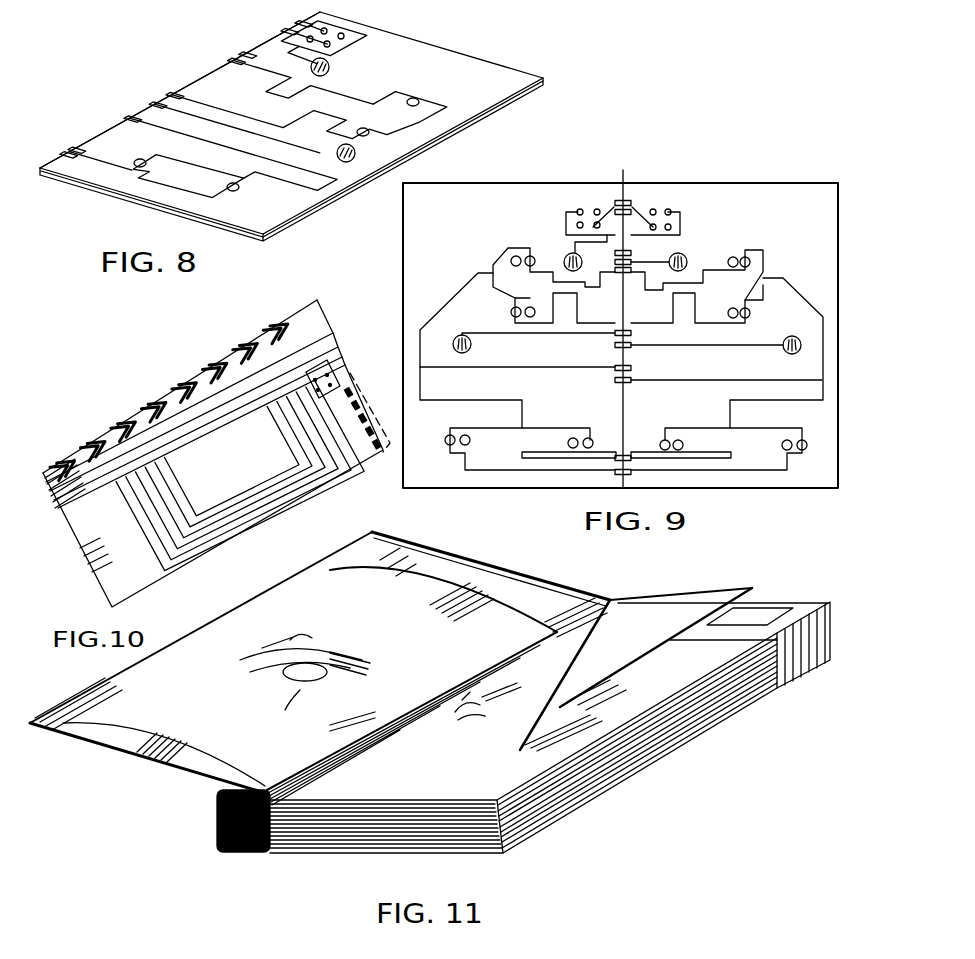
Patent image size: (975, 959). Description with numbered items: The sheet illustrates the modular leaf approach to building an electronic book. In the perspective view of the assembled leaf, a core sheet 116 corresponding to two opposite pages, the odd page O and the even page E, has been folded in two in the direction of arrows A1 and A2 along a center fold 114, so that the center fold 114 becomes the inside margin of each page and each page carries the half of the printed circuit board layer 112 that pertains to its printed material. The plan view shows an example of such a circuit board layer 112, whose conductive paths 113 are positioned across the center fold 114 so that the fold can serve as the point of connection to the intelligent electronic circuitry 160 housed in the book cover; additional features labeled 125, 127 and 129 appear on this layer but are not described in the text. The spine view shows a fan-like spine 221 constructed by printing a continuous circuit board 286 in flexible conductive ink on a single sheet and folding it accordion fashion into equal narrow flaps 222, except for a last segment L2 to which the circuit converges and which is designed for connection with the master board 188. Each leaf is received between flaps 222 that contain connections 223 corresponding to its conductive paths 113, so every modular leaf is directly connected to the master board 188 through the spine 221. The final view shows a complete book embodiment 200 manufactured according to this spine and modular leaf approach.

In FIG. 8, the circuit board layer 112 is at (328, 200).
In FIG. 9, the circuit board layer 112 is at (838, 347).
In FIG. 8, the conductive paths 113 is at (134, 118).
In FIG. 9, the conductive paths 113 is at (633, 368).
In FIG. 8, the center fold 114 is at (42, 176).
In FIG. 9, the center fold 114 is at (623, 175).
In FIG. 8, the core sheet 116 is at (574, 77).
In FIG. 8, the contact pad 125 is at (413, 99).
In FIG. 9, the contact pad 125 is at (746, 255).
In FIG. 8, the switch contacts 127 is at (330, 32).
In FIG. 9, the switch contacts 127 is at (668, 210).
In FIG. 8, the lamp 129 is at (330, 67).
In FIG. 9, the lamp 129 is at (798, 338).
In FIG. 10, the intelligent electronic circuitry 160 is at (358, 378).
In FIG. 10, the master board 188 is at (340, 380).
In FIG. 11, the embodiment 200 is at (656, 584).
In FIG. 10, the fan-like spine 221 is at (219, 444).
In FIG. 10, the flaps 222 is at (322, 320).
In FIG. 10, the connections 223 is at (235, 340).
In FIG. 10, the continuous circuit board 286 is at (262, 515).
In FIG. 8, the folding arrow A1 is at (195, 10).
In FIG. 8, the folding arrow A2 is at (408, 10).
In FIG. 8, the odd page O is at (513, 77).
In FIG. 8, the even page E is at (507, 105).
In FIG. 10, the last segment L2 is at (150, 580).